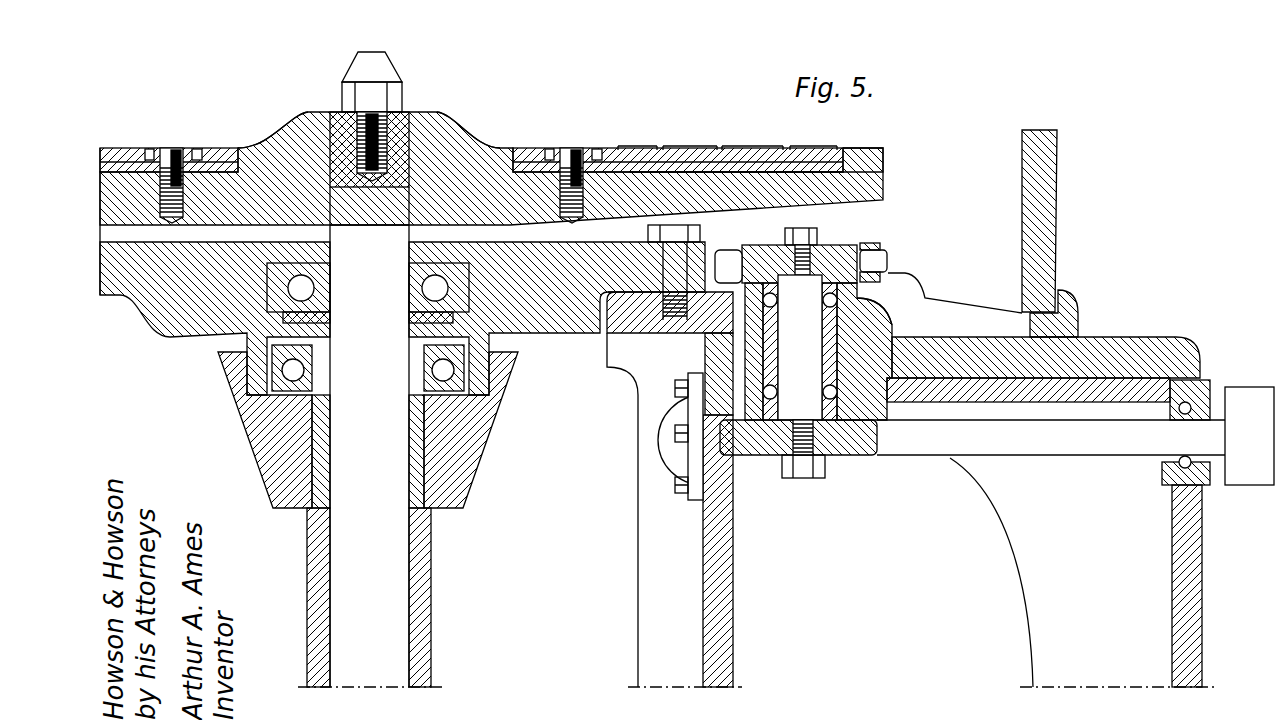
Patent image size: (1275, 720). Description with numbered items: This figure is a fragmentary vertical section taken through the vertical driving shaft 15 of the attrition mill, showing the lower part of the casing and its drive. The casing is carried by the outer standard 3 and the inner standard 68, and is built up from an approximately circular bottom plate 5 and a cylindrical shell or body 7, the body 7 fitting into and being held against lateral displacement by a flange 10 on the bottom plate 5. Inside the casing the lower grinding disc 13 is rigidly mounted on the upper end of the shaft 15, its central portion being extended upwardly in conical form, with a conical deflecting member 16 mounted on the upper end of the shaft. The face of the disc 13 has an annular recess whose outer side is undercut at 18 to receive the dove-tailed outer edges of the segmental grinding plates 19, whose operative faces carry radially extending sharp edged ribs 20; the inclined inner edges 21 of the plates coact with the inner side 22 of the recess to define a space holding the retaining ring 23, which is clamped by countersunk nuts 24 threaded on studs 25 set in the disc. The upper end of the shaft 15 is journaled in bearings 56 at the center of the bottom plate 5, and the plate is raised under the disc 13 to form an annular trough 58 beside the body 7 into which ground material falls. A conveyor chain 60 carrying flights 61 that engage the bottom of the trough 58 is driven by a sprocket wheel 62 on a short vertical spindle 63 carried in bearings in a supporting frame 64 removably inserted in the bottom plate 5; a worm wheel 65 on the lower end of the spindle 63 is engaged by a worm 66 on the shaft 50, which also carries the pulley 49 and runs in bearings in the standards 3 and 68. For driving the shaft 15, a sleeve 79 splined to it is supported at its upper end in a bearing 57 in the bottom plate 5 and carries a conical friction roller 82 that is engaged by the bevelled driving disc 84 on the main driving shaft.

The outer standard 3 is at (1198, 546).
The bottom plate 5 is at (147, 290).
The cylindrical shell 7 is at (1054, 177).
The flange 10 is at (1070, 292).
The lower grinding disc 13 is at (875, 172).
The vertical driving shaft 15 is at (378, 548).
The conical deflecting member 16 is at (380, 71).
The undercut side 18 is at (846, 152).
The segmental grinding plates 19 is at (688, 149).
The sharp edged ribs 20 is at (748, 146).
The inclined inner edge 21 is at (123, 149).
The inner side of recess 22 is at (238, 147).
The retaining ring 23 is at (212, 149).
The countersunk nuts 24 is at (152, 148).
The studs 25 is at (172, 148).
The pulley 49 is at (1249, 387).
The shaft 50 is at (1073, 432).
The bearings 56 is at (423, 290).
The bearing 57 is at (432, 368).
The annular trough 58 is at (973, 340).
The chain 60 is at (888, 278).
The flights 61 is at (952, 304).
The sprocket wheel 62 is at (850, 246).
The vertical spindle 63 is at (818, 347).
The supporting frame 64 is at (633, 332).
The worm wheel 65 is at (743, 437).
The worm 66 is at (838, 470).
The inner standard 68 is at (734, 576).
The sleeve 79 is at (424, 608).
The conical friction roller 82 is at (246, 413).
The bevelled driving disc 84 is at (478, 462).